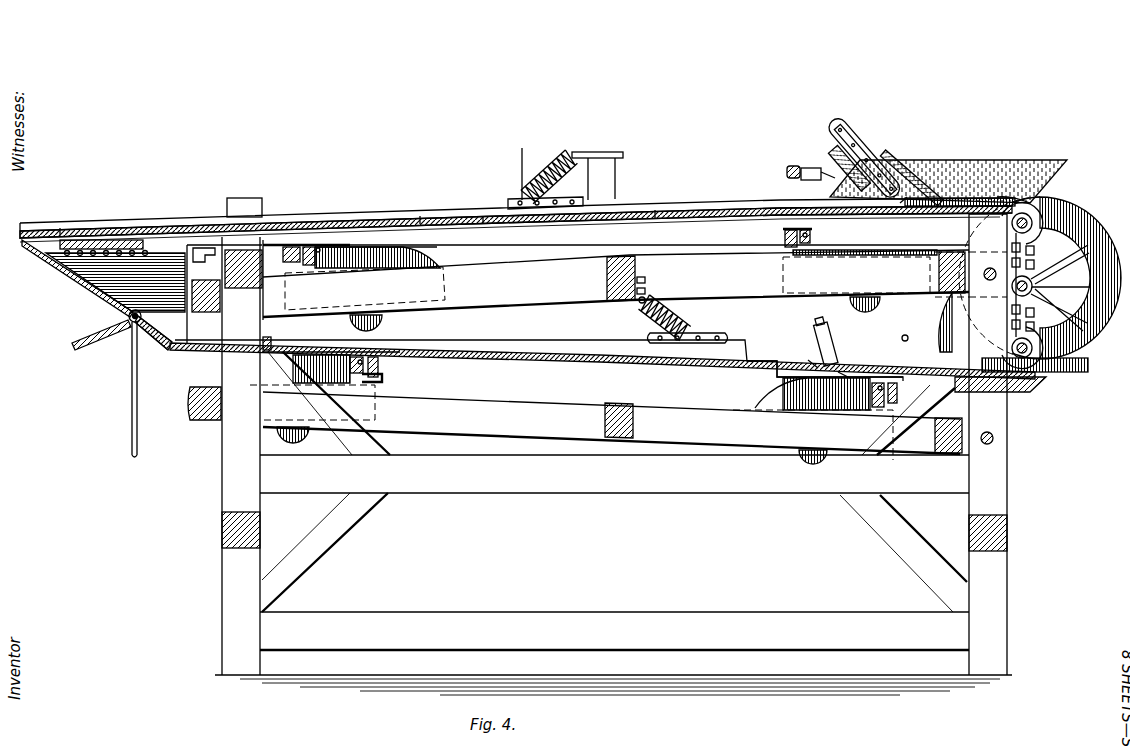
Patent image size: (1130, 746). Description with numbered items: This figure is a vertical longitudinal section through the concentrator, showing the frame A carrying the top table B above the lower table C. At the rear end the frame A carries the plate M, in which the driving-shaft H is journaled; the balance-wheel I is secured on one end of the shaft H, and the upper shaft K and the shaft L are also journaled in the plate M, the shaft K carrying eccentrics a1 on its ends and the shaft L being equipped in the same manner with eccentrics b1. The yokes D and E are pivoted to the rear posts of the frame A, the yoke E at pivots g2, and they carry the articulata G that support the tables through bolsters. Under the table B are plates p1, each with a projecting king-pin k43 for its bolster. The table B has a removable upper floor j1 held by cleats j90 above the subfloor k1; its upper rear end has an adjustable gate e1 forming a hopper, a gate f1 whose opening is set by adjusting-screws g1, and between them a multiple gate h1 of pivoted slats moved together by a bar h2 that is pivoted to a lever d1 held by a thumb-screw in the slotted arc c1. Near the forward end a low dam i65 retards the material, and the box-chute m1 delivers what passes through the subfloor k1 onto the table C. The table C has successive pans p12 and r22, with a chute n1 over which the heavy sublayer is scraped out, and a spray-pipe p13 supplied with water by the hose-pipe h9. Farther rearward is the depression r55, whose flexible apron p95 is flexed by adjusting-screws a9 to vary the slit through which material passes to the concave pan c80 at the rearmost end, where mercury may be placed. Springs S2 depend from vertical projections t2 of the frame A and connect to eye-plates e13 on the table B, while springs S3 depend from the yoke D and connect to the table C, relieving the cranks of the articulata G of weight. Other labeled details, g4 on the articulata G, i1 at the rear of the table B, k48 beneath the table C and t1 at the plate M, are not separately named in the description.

The frame A is at (613, 442).
The top table B is at (118, 224).
The lower table C is at (1106, 368).
The yoke D is at (635, 280).
The yoke E is at (606, 419).
The articulate G is at (870, 320).
The driving-shaft H is at (1051, 288).
The balance-wheel I is at (1040, 210).
The upper shaft K is at (1033, 282).
The shaft L is at (1045, 388).
The plate M is at (1038, 288).
The eccentric a1 is at (1045, 222).
The adjusting-screw a9 is at (819, 341).
The eccentric b1 is at (100, 273).
The arc c1 is at (858, 163).
The concave pan c80 is at (1025, 380).
The lever d1 is at (878, 158).
The adjustable gate e1 is at (895, 165).
The eye-plate e13 is at (511, 165).
The gate f1 is at (796, 166).
The adjusting-screw g1 is at (805, 175).
The pivot g2 is at (995, 440).
The guide rail g4 is at (763, 400).
The multiple gate h1 is at (920, 207).
The bar h2 is at (907, 200).
The hose-pipe h9 is at (140, 448).
The lip i1 is at (997, 197).
The low dam i65 is at (60, 255).
The upper floor j1 is at (58, 228).
The cleat j90 is at (483, 216).
The subfloor k1 is at (322, 246).
The king-pin k43 is at (305, 243).
The bearing block k48 is at (880, 413).
The box-chute m1 is at (90, 258).
The chute n1 is at (101, 342).
The plate p1 is at (316, 247).
The pan p12 is at (218, 332).
The spray-pipe p13 is at (125, 315).
The flexible apron p95 is at (810, 363).
The pan r22 is at (331, 339).
The depression r55 is at (844, 375).
The spring S2 is at (545, 179).
The spring S3 is at (682, 310).
The lower bearing t1 is at (1032, 346).
The vertical projection t2 is at (597, 176).